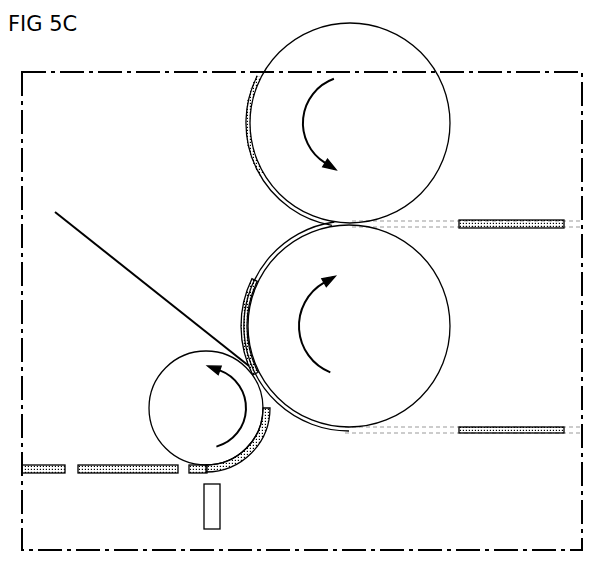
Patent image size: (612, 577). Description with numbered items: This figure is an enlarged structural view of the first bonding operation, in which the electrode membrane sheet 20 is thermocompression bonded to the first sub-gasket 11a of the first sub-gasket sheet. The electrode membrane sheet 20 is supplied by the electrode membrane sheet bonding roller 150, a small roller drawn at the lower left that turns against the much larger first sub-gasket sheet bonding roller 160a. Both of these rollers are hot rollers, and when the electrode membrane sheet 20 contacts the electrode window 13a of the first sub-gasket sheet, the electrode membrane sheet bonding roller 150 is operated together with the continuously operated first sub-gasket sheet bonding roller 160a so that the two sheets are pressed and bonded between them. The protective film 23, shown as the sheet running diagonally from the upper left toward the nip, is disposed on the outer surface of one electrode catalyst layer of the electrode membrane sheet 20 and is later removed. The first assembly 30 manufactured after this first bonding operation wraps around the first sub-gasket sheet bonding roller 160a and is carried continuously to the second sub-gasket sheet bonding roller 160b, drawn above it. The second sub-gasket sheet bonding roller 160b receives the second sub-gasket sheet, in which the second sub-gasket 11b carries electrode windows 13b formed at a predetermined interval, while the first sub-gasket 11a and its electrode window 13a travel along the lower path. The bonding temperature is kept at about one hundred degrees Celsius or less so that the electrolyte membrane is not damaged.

The second sub-gasket sheet bonding roller 160b is at (434, 142).
The first sub-gasket sheet bonding roller 160a is at (434, 332).
The electrode window 13b is at (246, 117).
The electrode window 13a is at (392, 432).
The second sub-gasket 11b is at (268, 190).
The first sub-gasket 11a is at (500, 432).
The first assembly 30 is at (254, 285).
The protective film 23 is at (123, 266).
The electrode membrane sheet bonding roller 150 is at (163, 400).
The electrode membrane sheet 20 is at (239, 462).